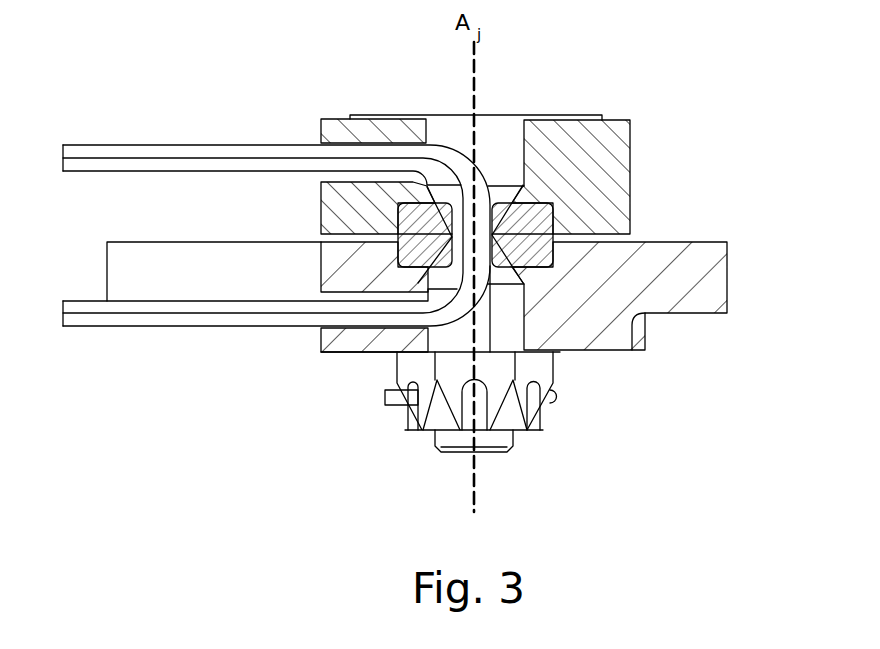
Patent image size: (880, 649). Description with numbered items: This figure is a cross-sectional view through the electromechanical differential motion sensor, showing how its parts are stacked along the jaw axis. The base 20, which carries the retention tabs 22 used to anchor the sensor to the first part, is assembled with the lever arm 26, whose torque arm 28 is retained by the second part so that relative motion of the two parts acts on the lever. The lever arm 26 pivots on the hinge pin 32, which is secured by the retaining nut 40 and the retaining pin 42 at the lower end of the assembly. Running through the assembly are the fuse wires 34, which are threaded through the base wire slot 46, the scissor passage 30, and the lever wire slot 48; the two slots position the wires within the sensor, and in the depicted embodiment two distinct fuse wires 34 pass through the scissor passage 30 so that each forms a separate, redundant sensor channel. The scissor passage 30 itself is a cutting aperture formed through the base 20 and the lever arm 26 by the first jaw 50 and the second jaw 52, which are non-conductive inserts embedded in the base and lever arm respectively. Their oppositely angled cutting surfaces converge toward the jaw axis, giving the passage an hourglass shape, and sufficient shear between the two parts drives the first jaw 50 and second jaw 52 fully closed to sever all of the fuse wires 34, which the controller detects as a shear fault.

The base 20 is at (615, 333).
The retention tabs 22 is at (188, 262).
The lever arm 26 is at (603, 187).
The torque arm 28 is at (698, 273).
The scissor passage 30 is at (492, 237).
The hinge pin 32 is at (498, 440).
The fuse wires 34 is at (162, 318).
The retaining nut 40 is at (543, 418).
The retaining pin 42 is at (388, 400).
The base wire slot 46 is at (328, 337).
The lever wire slot 48 is at (340, 128).
The first jaw 50 is at (533, 253).
The second jaw 52 is at (533, 220).